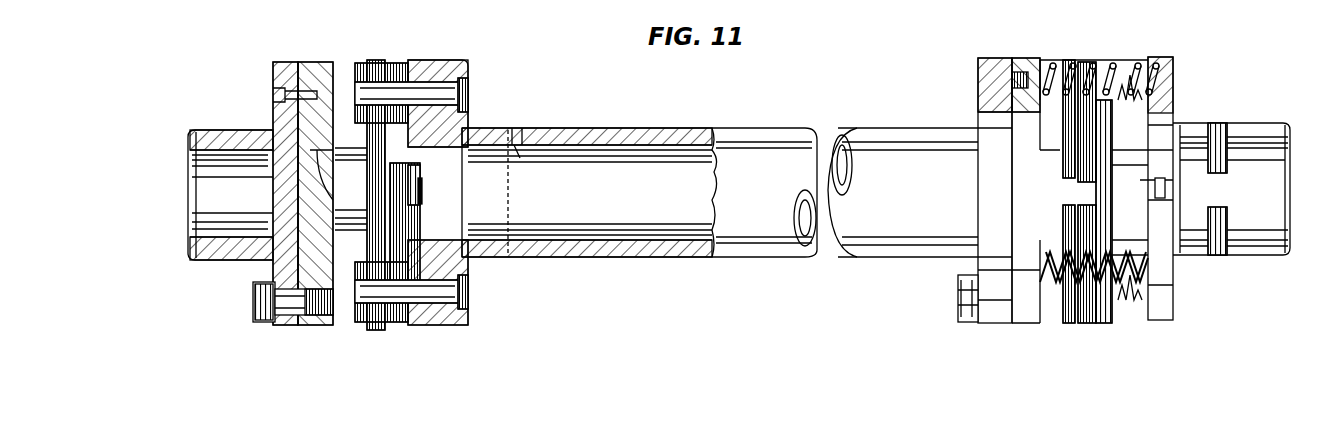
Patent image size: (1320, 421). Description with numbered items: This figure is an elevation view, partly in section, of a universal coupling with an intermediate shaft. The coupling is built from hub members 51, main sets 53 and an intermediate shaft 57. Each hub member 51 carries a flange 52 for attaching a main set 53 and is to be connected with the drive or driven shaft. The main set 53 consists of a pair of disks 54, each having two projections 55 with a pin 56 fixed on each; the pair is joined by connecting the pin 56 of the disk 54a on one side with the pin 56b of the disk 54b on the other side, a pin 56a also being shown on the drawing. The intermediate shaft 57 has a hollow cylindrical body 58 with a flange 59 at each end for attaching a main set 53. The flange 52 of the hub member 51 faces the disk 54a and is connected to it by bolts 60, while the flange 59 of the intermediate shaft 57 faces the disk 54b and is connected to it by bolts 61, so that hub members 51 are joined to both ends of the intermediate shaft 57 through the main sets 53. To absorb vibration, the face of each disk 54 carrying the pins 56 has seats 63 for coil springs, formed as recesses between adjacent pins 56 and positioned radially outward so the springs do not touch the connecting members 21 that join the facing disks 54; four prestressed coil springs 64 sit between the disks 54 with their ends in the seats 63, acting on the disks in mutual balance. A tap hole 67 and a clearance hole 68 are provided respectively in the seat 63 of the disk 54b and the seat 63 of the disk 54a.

The connecting members 21 is at (1100, 320).
The hub member 51 is at (212, 130).
The flange 52 is at (285, 62).
The main set 53 is at (383, 337).
The disks 54 is at (463, 56).
The disk on one side 54a is at (322, 62).
The disk on the other side 54b is at (455, 192).
The projections 55 is at (423, 63).
The pin 56 is at (462, 93).
The bolt pin 56a is at (425, 210).
The pin of the disk on the other side 56b is at (462, 291).
The intermediate shaft 57 is at (669, 121).
The hollow cylindrical body 58 is at (602, 128).
The flange 59 is at (520, 130).
The bolts 60 is at (292, 300).
The bolts 61 is at (958, 296).
The seats for coil springs 63 is at (1150, 62).
The coil springs 64 is at (1133, 60).
The tap hole 67 is at (1012, 80).
The clearance hole 68 is at (1165, 78).